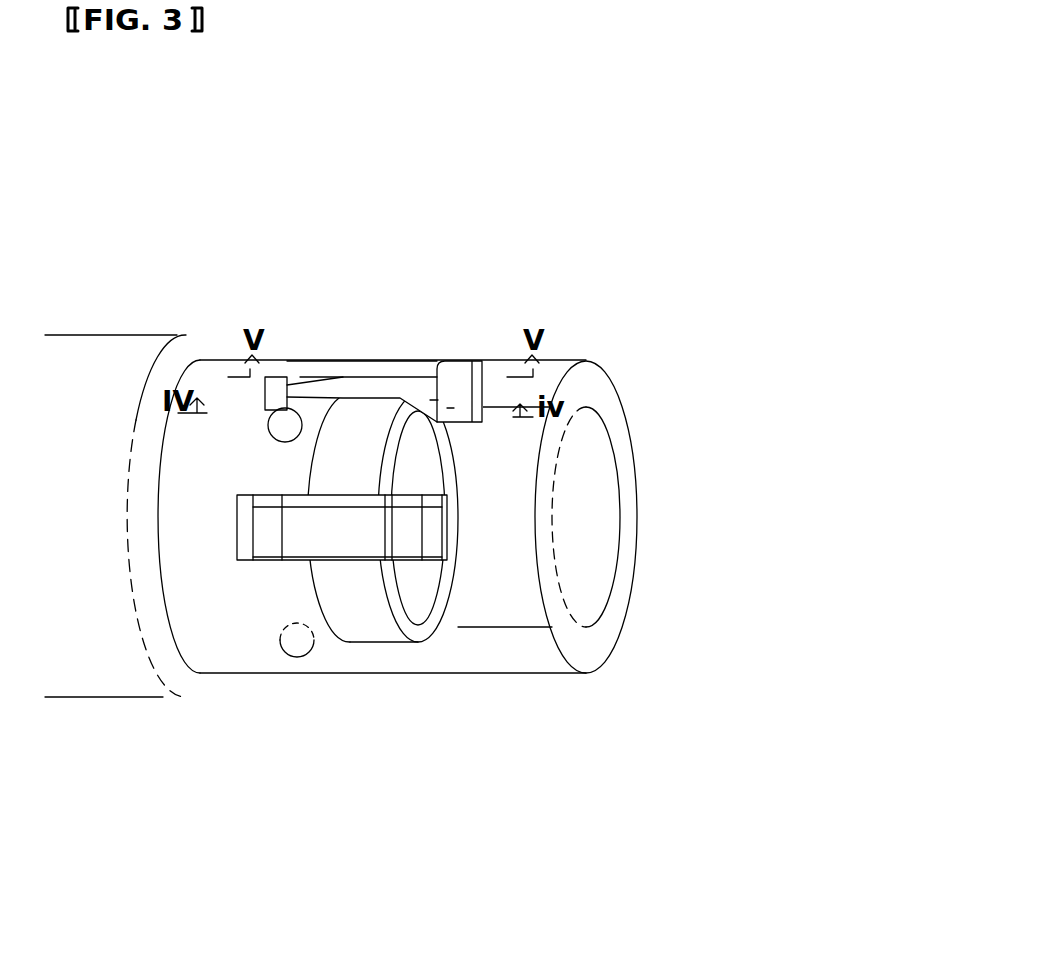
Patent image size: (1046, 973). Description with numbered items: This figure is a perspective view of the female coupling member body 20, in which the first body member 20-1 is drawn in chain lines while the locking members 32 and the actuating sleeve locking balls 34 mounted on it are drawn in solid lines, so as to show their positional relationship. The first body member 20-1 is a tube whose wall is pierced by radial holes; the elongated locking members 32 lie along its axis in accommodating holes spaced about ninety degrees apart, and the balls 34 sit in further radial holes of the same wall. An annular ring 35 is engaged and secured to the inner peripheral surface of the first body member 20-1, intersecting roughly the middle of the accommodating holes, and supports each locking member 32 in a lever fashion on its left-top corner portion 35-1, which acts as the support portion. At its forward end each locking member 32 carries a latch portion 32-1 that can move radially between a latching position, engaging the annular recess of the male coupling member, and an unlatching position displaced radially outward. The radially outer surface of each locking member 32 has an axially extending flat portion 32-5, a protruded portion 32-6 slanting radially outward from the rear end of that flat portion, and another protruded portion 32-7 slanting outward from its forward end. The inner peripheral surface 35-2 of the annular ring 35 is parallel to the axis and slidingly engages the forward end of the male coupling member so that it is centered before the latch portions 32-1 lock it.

The female coupling member body 20 is at (557, 675).
The first body member 20-1 is at (560, 780).
The locking member 32 is at (407, 366).
The latch portion 32-1 is at (482, 418).
The flat portion 32-5 is at (345, 392).
The protruded portion 32-6 is at (295, 377).
The protruded portion 32-7 is at (460, 362).
The actuating sleeve locking balls 34 is at (270, 412).
The annular ring 35 is at (387, 633).
The left-top corner portion 35-1 is at (308, 485).
The inner peripheral surface 35-2 is at (455, 466).